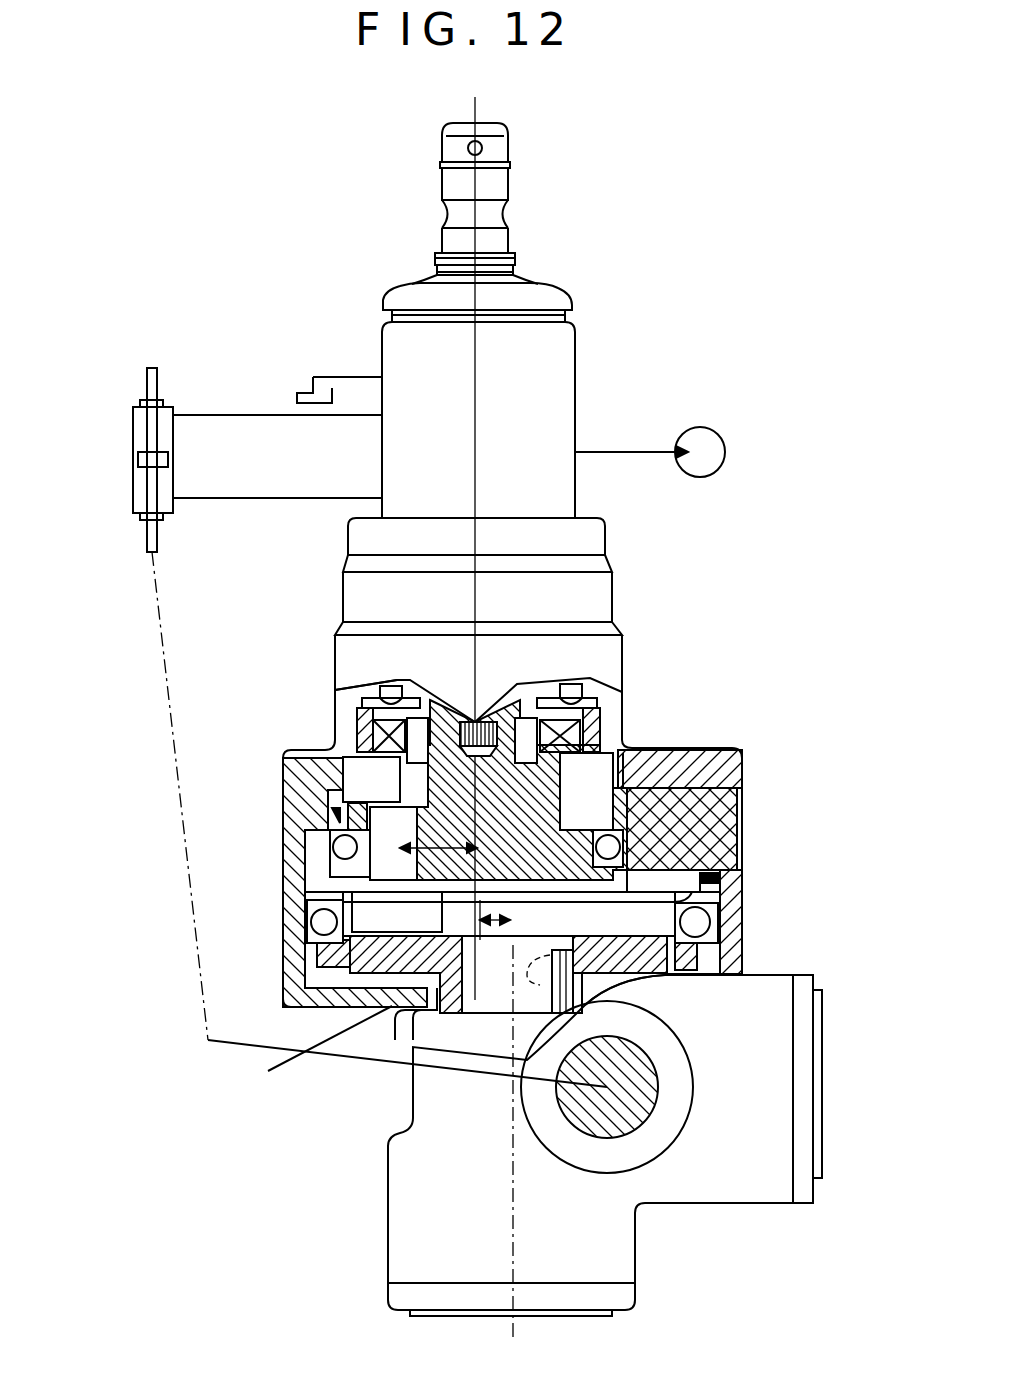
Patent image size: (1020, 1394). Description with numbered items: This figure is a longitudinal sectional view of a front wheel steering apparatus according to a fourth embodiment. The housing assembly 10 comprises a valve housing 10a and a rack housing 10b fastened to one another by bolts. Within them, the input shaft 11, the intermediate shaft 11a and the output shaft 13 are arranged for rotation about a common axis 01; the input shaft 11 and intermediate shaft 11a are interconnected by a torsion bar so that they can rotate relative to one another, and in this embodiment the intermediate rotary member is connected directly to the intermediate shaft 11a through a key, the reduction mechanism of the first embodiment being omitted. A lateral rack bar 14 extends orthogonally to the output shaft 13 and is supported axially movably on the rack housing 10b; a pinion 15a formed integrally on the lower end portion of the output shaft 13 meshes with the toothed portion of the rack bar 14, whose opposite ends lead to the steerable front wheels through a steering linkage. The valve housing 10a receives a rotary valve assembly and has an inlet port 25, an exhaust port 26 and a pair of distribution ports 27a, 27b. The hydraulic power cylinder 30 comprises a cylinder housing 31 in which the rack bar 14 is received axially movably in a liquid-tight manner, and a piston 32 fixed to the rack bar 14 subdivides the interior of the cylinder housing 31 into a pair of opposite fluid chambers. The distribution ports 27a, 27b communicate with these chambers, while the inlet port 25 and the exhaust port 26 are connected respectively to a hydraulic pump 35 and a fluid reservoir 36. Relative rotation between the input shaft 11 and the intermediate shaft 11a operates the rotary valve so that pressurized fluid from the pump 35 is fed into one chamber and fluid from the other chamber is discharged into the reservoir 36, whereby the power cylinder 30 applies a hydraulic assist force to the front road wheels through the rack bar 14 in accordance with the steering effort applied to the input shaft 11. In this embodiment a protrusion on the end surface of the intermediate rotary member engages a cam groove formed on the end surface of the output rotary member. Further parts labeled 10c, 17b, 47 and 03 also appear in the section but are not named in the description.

The input shaft 11 is at (498, 241).
The intermediate shaft 11a is at (453, 712).
The exhaust port 26 is at (380, 378).
The common axis 01 is at (478, 385).
The housing assembly 10 is at (745, 878).
The valve housing 10a is at (600, 594).
The rack housing 10b is at (398, 1205).
The housing ring 10c is at (734, 826).
The output shaft 13 is at (478, 1040).
The rack bar 14 is at (642, 1105).
The pinion 15a is at (413, 1088).
The bearing seat 17b is at (372, 690).
The inlet port 25 is at (575, 455).
The distribution port 27a is at (380, 418).
The distribution port 27b is at (380, 496).
The hydraulic power cylinder 30 is at (131, 427).
The cylinder housing 31 is at (133, 490).
The piston 32 is at (165, 460).
The hydraulic pump 35 is at (722, 464).
The fluid reservoir 36 is at (297, 403).
The plate 47 is at (607, 935).
The axis 03 is at (513, 1180).